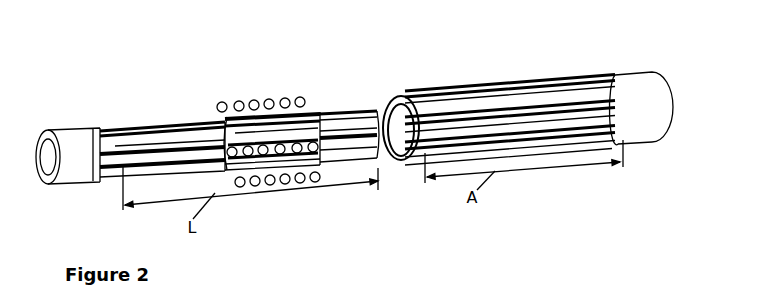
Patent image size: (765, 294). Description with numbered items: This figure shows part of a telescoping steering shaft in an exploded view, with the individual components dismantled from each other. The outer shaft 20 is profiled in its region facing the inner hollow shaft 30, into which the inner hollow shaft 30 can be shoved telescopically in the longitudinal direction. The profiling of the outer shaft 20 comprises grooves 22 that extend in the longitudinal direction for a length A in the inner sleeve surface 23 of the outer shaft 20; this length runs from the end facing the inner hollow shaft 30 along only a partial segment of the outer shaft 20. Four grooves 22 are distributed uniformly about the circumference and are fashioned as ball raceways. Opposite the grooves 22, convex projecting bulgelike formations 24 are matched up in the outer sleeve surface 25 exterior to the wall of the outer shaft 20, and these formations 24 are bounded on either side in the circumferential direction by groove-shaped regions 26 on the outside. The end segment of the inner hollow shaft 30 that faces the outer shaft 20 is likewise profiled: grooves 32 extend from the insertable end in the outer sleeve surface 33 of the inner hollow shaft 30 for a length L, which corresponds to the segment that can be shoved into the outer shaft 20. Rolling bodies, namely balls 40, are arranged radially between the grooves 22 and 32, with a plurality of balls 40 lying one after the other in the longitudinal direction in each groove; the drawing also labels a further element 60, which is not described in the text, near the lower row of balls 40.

The outer shaft 20 is at (539, 86).
The grooves 22 is at (392, 97).
The inner sleeve surface 23 is at (386, 97).
The bulgelike formations 24 is at (452, 97).
The outer sleeve surface 25 is at (482, 86).
The groove-shaped regions 26 is at (597, 97).
The inner hollow shaft 30 is at (197, 105).
The grooves 32 is at (313, 100).
The outer sleeve surface 33 is at (345, 100).
The balls 40 is at (252, 100).
The openings 60 is at (310, 188).